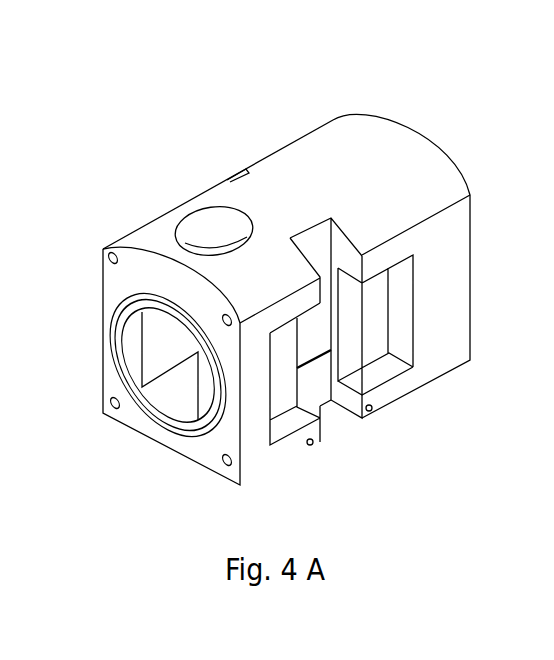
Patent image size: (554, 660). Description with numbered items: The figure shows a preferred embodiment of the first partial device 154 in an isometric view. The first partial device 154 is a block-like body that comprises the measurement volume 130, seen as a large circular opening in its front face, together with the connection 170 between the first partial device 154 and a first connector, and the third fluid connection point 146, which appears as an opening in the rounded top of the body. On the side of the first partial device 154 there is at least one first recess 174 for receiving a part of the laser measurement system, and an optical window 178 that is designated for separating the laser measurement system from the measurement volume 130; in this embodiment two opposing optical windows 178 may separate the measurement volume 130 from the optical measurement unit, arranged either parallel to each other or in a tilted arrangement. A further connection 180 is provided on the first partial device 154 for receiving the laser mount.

The first partial device 154 is at (428, 108).
The third fluid connection point 146 is at (193, 225).
The connection 170 is at (107, 256).
The measurement volume 130 is at (182, 356).
The optical window 178 is at (318, 330).
The first recess 174 is at (398, 307).
The further connection 180 is at (313, 443).